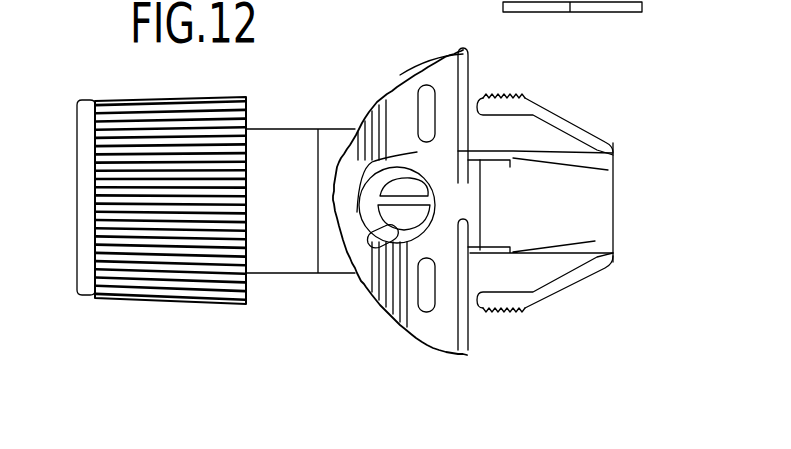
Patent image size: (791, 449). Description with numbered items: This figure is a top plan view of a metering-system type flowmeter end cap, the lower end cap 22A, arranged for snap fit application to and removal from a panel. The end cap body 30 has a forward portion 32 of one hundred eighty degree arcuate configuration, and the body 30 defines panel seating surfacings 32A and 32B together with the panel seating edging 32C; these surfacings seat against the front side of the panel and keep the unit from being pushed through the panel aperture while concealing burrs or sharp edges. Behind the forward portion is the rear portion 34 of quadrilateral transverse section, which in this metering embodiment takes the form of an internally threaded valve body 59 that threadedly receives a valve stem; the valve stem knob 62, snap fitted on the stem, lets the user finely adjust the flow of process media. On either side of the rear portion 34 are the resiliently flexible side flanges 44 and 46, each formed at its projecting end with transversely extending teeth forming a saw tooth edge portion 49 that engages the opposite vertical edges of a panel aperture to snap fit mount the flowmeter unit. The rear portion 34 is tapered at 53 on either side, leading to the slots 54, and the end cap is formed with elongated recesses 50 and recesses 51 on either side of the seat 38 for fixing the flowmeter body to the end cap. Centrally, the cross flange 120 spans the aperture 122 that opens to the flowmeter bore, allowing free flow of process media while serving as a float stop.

The valve stem knob 62 is at (90, 228).
The forward portion 32 is at (357, 120).
The end cap body 30 is at (409, 68).
The elongated recess 50 is at (420, 97).
The recess 51 is at (470, 66).
The slot 54 is at (500, 155).
The seat 38 is at (383, 243).
The cross flange 120 is at (383, 183).
The aperture 122 is at (398, 242).
The panel seating surfacing 32A is at (473, 322).
The panel seating surfacing 32B is at (477, 80).
The panel seating edging 32C is at (622, 13).
The side flange 46 is at (560, 111).
The side flange 44 is at (580, 286).
The saw tooth edge portion 49 is at (510, 93).
The tapered portion 53 is at (590, 167).
The lower end cap 22A is at (613, 178).
The rear portion 34 is at (585, 202).
The valve body 59 is at (613, 225).